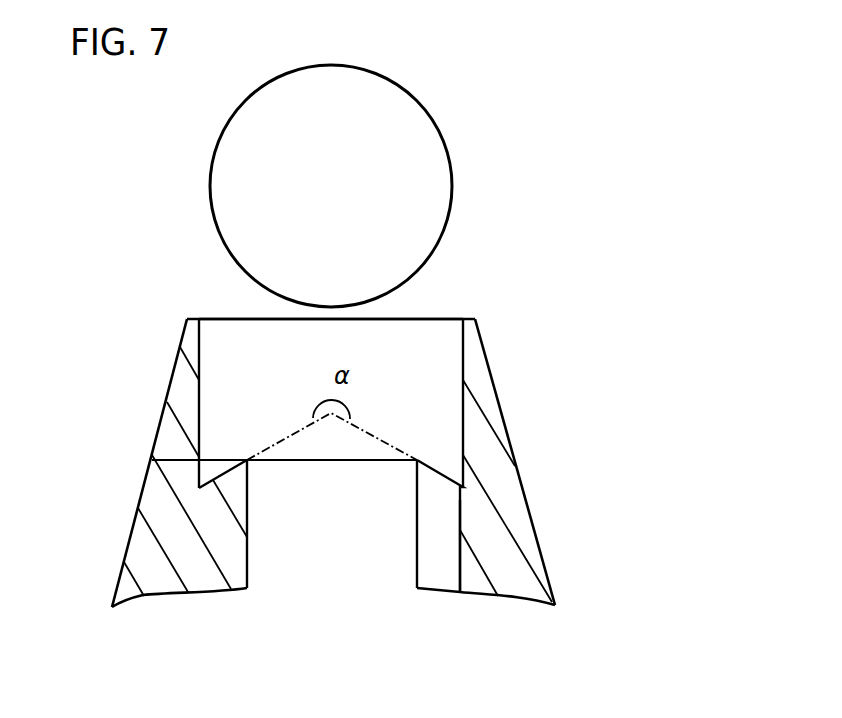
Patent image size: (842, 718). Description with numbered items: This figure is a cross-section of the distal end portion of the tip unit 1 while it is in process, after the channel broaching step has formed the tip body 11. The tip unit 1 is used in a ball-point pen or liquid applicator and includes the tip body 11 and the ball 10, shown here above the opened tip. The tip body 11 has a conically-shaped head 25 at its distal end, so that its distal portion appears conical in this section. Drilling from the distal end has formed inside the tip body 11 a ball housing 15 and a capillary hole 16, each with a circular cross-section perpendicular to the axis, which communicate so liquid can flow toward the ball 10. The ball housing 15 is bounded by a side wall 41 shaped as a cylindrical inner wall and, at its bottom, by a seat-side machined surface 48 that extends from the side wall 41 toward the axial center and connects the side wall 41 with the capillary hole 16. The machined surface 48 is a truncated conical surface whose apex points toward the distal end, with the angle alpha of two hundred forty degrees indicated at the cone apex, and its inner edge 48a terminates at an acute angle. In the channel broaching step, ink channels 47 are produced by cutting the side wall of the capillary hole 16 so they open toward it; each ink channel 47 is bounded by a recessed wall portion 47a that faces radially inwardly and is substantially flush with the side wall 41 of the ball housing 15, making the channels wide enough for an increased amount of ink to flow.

The tip unit 1 is at (523, 232).
The ball 10 is at (390, 95).
The tip body 11 is at (160, 511).
The ball housing 15 is at (425, 328).
The capillary hole 16 is at (343, 565).
The head 25 is at (488, 360).
The side wall 41 is at (462, 430).
The ink channels 47 is at (442, 577).
The recessed wall portion 47a is at (462, 543).
The machined surface 48 is at (152, 458).
The inner edge 48a is at (247, 457).